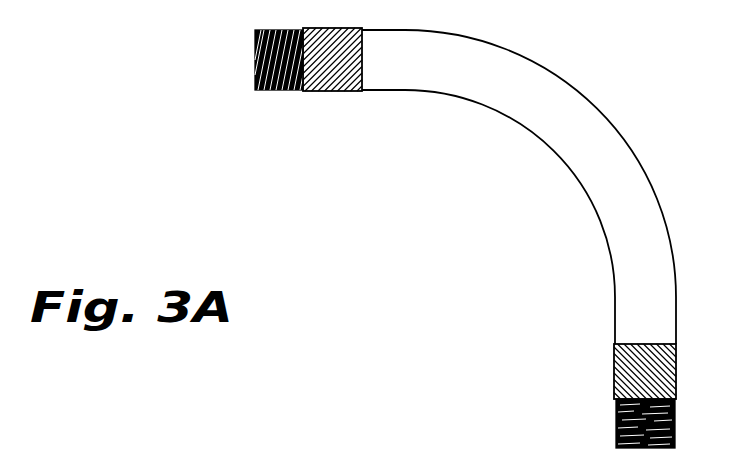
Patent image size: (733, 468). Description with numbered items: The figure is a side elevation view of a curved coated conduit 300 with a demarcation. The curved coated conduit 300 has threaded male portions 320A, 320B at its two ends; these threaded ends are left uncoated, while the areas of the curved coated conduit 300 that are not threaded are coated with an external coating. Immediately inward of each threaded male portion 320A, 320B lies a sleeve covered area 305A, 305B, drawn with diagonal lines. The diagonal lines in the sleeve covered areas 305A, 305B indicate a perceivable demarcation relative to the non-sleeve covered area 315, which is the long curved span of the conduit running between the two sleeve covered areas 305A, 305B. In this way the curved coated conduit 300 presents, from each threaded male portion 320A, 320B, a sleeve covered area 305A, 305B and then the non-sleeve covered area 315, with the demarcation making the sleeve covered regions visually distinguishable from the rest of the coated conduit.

The curved coated conduit 300 is at (407, 258).
The non-sleeve covered area 315 is at (589, 147).
The sleeve covered area 305A is at (336, 91).
The sleeve covered area 305B is at (614, 372).
The threaded male portion 320A is at (258, 87).
The threaded male portion 320B is at (616, 440).